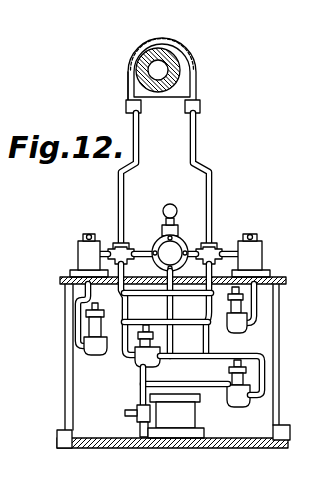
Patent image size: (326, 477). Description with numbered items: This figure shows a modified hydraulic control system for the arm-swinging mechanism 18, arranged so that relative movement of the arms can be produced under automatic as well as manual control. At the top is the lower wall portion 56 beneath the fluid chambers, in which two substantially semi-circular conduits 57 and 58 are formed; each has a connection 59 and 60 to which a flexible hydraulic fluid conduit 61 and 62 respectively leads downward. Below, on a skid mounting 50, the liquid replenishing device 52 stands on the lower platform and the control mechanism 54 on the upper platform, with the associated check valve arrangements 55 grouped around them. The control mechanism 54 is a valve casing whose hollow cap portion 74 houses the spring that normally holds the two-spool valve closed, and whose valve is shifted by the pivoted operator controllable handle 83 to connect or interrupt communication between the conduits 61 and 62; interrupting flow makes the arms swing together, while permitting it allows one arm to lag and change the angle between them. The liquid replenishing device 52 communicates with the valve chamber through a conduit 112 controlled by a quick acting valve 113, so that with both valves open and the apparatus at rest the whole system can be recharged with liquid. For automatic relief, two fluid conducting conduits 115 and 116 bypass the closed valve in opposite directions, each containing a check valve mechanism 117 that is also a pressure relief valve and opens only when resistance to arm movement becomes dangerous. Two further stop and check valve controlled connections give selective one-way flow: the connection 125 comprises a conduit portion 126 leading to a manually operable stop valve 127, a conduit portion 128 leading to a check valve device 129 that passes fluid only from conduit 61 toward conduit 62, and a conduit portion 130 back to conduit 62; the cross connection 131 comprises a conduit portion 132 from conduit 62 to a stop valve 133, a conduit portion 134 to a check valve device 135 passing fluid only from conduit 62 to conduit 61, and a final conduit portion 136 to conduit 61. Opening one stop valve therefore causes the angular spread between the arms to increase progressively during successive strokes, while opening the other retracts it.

The mechanism 18 is at (178, 38).
The skid mounting 50 is at (263, 442).
The liquid replenishing device 52 is at (180, 420).
The control mechanism 54 is at (183, 238).
The check valve arrangements 55 is at (140, 357).
The lower wall portion 56 is at (152, 46).
The semi-circular conduit 57 is at (180, 62).
The semi-circular conduit 58 is at (133, 68).
The connection 59 is at (199, 110).
The connection 60 is at (128, 108).
The flexible hydraulic fluid conduit 61 is at (212, 182).
The flexible hydraulic fluid conduit 62 is at (118, 184).
The hollow cap portion 74 is at (163, 250).
The operator controllable handle 83 is at (169, 204).
The conduit 112 is at (128, 440).
The quick acting valve 113 is at (124, 411).
The fluid conducting conduit 115 is at (215, 384).
The fluid conducting conduit 116 is at (213, 360).
The check valve mechanism 117 is at (135, 362).
The stop and check valve controlled connection 125 is at (265, 255).
The conduit portion 126 is at (232, 236).
The manually operable stop valve 127 is at (256, 240).
The conduit portion 128 is at (256, 302).
The check valve device 129 is at (242, 327).
The conduit portion 130 is at (146, 324).
The cross connection 131 is at (72, 267).
The conduit portion 132 is at (101, 244).
The stop valve 133 is at (80, 247).
The conduit portion 134 is at (70, 320).
The check valve device 135 is at (96, 340).
The conduit portion 136 is at (197, 320).